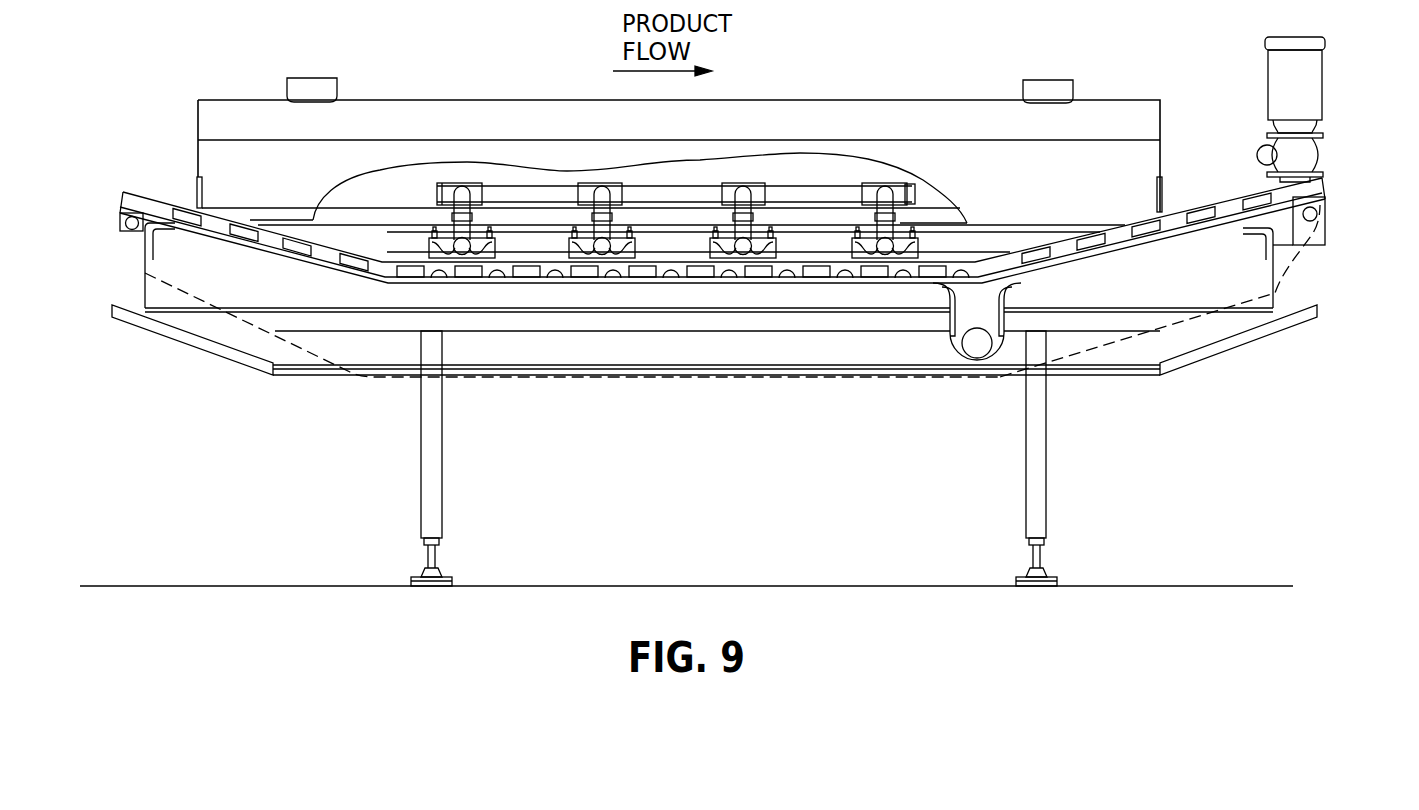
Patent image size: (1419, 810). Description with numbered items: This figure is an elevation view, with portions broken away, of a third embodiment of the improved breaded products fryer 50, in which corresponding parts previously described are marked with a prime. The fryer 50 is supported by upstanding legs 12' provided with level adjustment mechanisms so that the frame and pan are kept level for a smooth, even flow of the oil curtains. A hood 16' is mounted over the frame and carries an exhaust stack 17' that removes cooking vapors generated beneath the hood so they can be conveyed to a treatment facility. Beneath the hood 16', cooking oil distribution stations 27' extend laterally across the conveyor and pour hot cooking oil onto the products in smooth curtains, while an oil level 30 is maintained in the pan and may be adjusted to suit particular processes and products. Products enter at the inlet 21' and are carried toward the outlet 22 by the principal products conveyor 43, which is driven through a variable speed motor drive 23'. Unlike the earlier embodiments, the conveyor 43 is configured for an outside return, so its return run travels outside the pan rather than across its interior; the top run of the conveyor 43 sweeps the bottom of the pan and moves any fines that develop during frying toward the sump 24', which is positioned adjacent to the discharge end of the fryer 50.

The breaded products fryer 50 is at (808, 94).
The hood 16' is at (679, 139).
The exhaust stack 17' is at (704, 55).
The cooking oil distribution stations 27' is at (673, 149).
The oil level 30 is at (377, 252).
The inlet 21' is at (142, 166).
The outlet 22 is at (1325, 192).
The variable speed motor drive 23' is at (1331, 109).
The sump 24' is at (977, 379).
The legs 12' is at (734, 458).
The principal products conveyor 43 is at (128, 233).